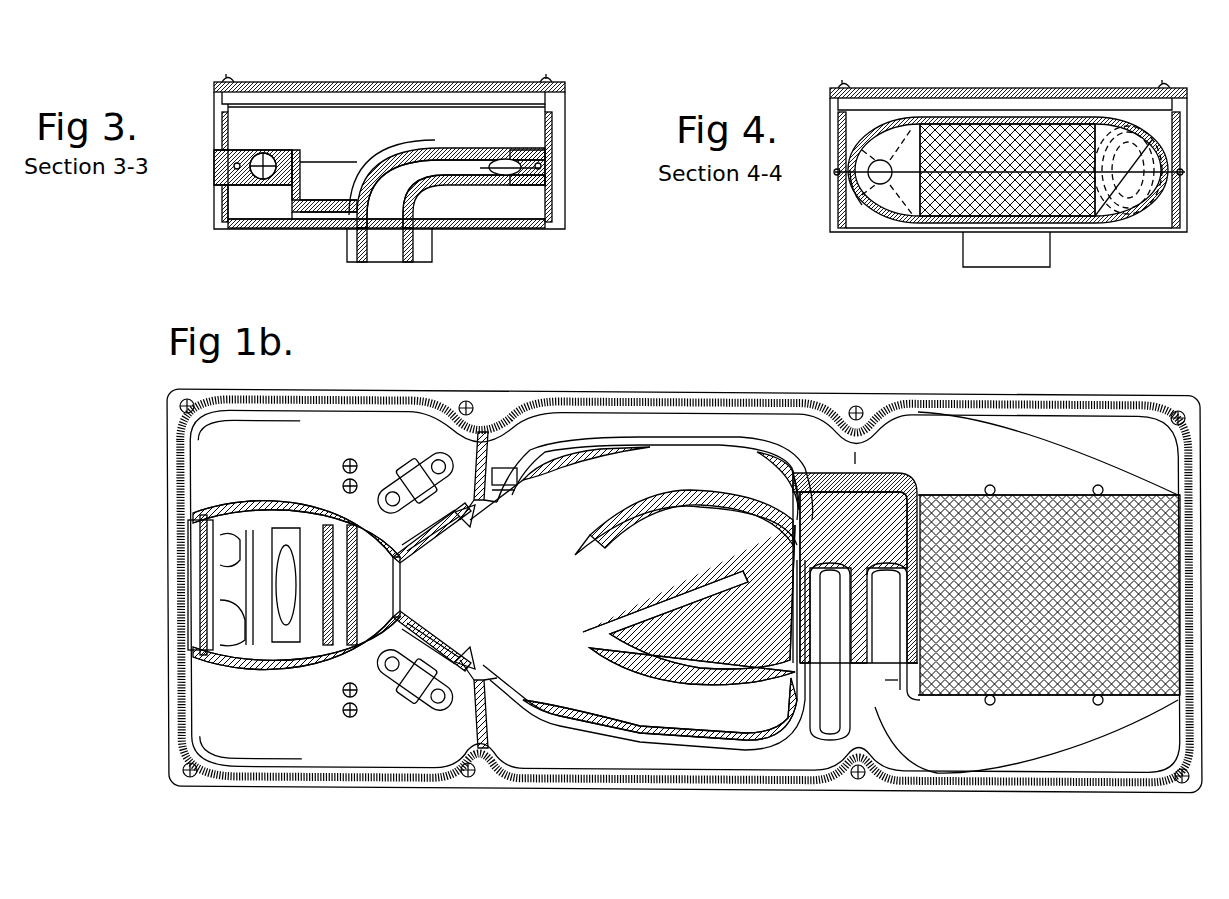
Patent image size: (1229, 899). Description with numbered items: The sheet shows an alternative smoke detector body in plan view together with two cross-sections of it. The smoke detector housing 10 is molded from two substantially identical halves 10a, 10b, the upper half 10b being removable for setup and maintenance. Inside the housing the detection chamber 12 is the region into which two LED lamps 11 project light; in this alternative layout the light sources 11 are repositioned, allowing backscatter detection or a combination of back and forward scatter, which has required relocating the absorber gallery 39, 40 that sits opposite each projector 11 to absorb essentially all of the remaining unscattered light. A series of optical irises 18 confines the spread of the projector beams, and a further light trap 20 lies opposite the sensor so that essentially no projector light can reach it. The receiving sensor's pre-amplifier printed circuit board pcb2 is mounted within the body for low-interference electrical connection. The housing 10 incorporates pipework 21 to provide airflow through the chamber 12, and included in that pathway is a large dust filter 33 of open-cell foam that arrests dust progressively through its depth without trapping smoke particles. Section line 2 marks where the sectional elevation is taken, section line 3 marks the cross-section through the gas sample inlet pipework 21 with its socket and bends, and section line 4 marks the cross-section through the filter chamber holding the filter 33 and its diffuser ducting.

In FIG. 3, the smoke detector housing 10 is at (308, 69).
In FIG. 4, the smoke detector housing 10 is at (984, 80).
In FIG. 1B, the smoke detector housing 10 is at (684, 591).
In FIG. 4, the housing half 10a is at (878, 124).
In FIG. 4, the housing half 10b is at (875, 218).
In FIG. 1B, the LED lamp 11 is at (404, 474).
In FIG. 1B, the detection chamber 12 is at (509, 598).
In FIG. 1B, the optical iris 18 is at (495, 440).
In FIG. 1B, the light trap 20 is at (739, 646).
In FIG. 3, the pipework 21 is at (268, 172).
In FIG. 4, the dust filter 33 is at (956, 214).
In FIG. 1B, the dust filter 33 is at (1049, 595).
In FIG. 1B, the absorber gallery 39 is at (729, 718).
In FIG. 1B, the absorber gallery 40 is at (724, 486).
In FIG. 1B, the pre-amplifier printed circuit board pcb2 is at (205, 590).
In FIG. 1B, the section line 2- 2 is at (143, 574).
In FIG. 1B, the section line 3- 3 is at (820, 379).
In FIG. 1B, the section line 4- 4 is at (940, 379).